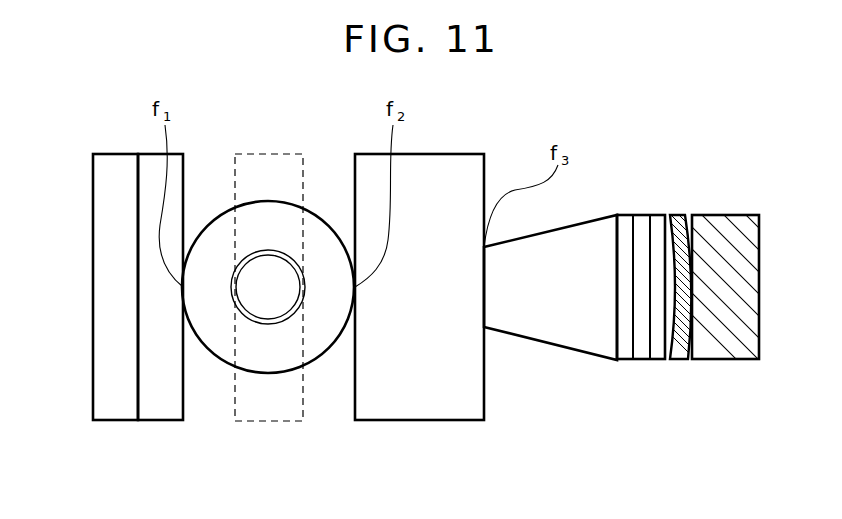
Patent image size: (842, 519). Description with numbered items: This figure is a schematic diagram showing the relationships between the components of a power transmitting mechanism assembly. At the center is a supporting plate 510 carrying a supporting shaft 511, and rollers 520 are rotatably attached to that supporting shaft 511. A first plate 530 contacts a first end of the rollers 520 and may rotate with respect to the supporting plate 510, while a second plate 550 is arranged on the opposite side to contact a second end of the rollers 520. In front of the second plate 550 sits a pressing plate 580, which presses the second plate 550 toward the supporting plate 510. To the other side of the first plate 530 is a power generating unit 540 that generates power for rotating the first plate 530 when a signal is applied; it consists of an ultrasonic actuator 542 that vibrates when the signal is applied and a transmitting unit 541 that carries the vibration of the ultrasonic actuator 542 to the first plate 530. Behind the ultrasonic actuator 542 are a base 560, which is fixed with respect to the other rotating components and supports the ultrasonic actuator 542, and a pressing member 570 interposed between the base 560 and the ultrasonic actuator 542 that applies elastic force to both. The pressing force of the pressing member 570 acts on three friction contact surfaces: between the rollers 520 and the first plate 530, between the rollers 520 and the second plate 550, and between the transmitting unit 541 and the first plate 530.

The supporting plate 510 is at (283, 152).
The supporting shaft 511 is at (258, 305).
The rollers 520 is at (280, 362).
The first plate 530 is at (415, 410).
The power generating unit 540 is at (574, 353).
The transmitting unit 541 is at (582, 340).
The ultrasonic actuator 542 is at (643, 355).
The second plate 550 is at (160, 413).
The base 560 is at (731, 360).
The pressing member 570 is at (679, 360).
The pressing plate 580 is at (107, 412).